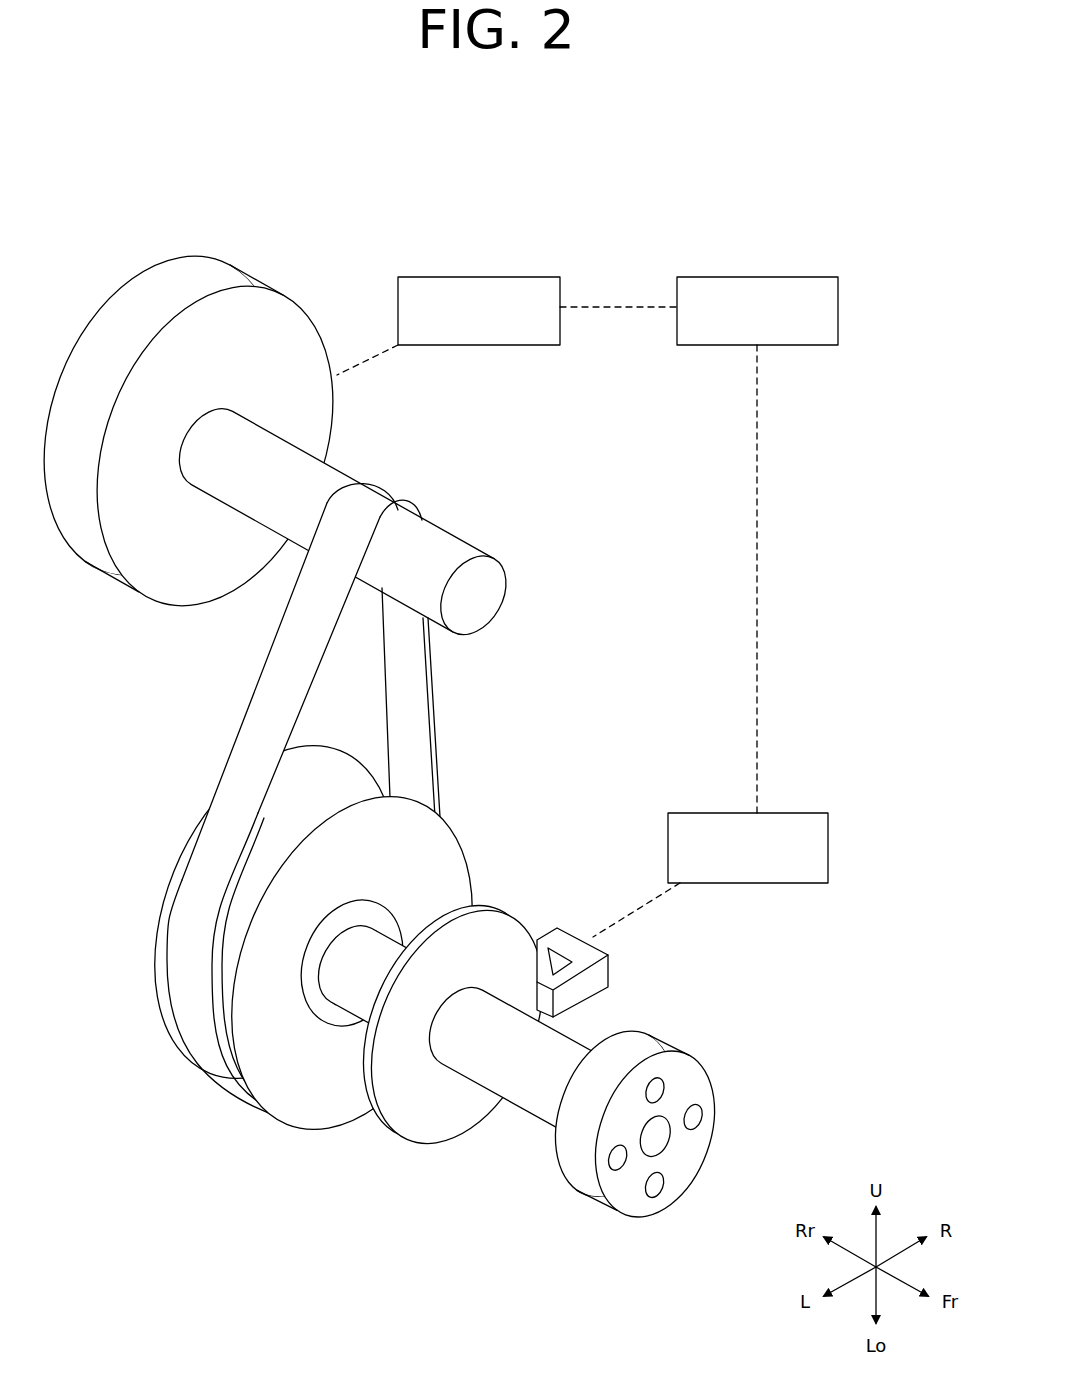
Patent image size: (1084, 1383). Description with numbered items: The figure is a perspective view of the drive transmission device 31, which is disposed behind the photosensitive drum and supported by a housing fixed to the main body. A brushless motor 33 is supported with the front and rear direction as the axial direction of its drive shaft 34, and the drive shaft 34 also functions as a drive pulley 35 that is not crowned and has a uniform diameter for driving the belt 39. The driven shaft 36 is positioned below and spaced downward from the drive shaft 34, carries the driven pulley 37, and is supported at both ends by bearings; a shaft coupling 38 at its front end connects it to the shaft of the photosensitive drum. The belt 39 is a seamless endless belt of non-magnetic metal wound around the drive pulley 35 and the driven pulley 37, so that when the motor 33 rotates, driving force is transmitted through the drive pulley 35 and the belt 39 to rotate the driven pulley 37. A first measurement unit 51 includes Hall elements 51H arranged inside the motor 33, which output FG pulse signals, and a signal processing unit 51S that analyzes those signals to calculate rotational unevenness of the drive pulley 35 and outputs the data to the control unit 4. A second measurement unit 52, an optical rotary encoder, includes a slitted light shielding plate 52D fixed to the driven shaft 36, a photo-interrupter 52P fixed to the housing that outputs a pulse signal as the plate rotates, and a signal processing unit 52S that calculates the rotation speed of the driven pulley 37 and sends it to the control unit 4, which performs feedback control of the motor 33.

The drive transmission device 31 is at (173, 164).
The first measurement unit 51 is at (452, 205).
The signal processing unit 51S is at (530, 277).
The Hall elements 51H is at (293, 300).
The motor 33 is at (201, 431).
The control unit 4 is at (785, 277).
The drive shaft 34 is at (360, 521).
The drive pulley 35 is at (457, 541).
The belt 39 is at (245, 722).
The driven pulley 37 is at (308, 825).
The driven shaft 36 is at (491, 1046).
The shaft coupling 38 is at (553, 1140).
The second measurement unit 52 is at (686, 767).
The signal processing unit 52S is at (790, 813).
The light shielding plate 52D is at (523, 919).
The photo-interrupter 52P is at (607, 953).